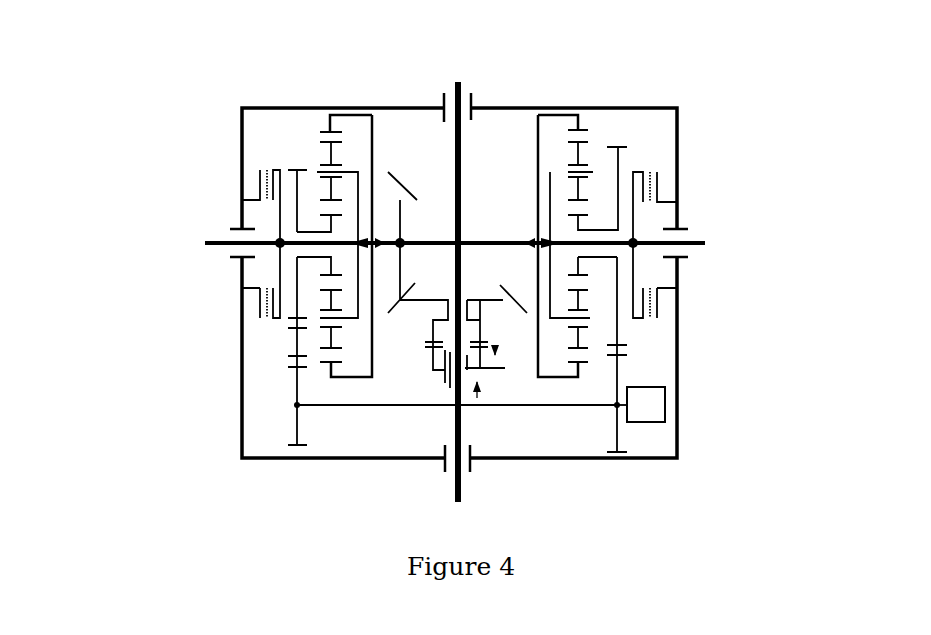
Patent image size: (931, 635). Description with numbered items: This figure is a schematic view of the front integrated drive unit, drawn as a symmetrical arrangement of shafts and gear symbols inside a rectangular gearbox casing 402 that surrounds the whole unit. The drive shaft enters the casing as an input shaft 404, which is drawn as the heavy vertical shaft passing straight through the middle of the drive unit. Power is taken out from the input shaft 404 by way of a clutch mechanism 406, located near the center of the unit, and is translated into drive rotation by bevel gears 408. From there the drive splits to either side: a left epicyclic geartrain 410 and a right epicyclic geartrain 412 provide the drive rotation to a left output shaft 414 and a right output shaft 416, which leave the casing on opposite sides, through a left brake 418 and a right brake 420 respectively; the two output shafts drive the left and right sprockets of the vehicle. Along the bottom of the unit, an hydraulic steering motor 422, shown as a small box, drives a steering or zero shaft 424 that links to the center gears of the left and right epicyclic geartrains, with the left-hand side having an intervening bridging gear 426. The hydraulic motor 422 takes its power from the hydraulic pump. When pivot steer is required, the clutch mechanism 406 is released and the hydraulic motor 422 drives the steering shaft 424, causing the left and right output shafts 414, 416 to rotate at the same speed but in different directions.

The gearbox casing 402 is at (235, 148).
The input shaft 404 is at (463, 143).
The clutch mechanism 406 is at (500, 387).
The bevel gears 408 is at (400, 170).
The left epicyclic geartrain 410 is at (317, 135).
The right epicyclic geartrain 412 is at (597, 133).
The left output shaft 414 is at (205, 230).
The right output shaft 416 is at (703, 232).
The left brake 418 is at (257, 322).
The right brake 420 is at (658, 323).
The hydraulic steering motor 422 is at (647, 430).
The steering shaft 424 is at (352, 412).
The bridging gear 426 is at (285, 342).